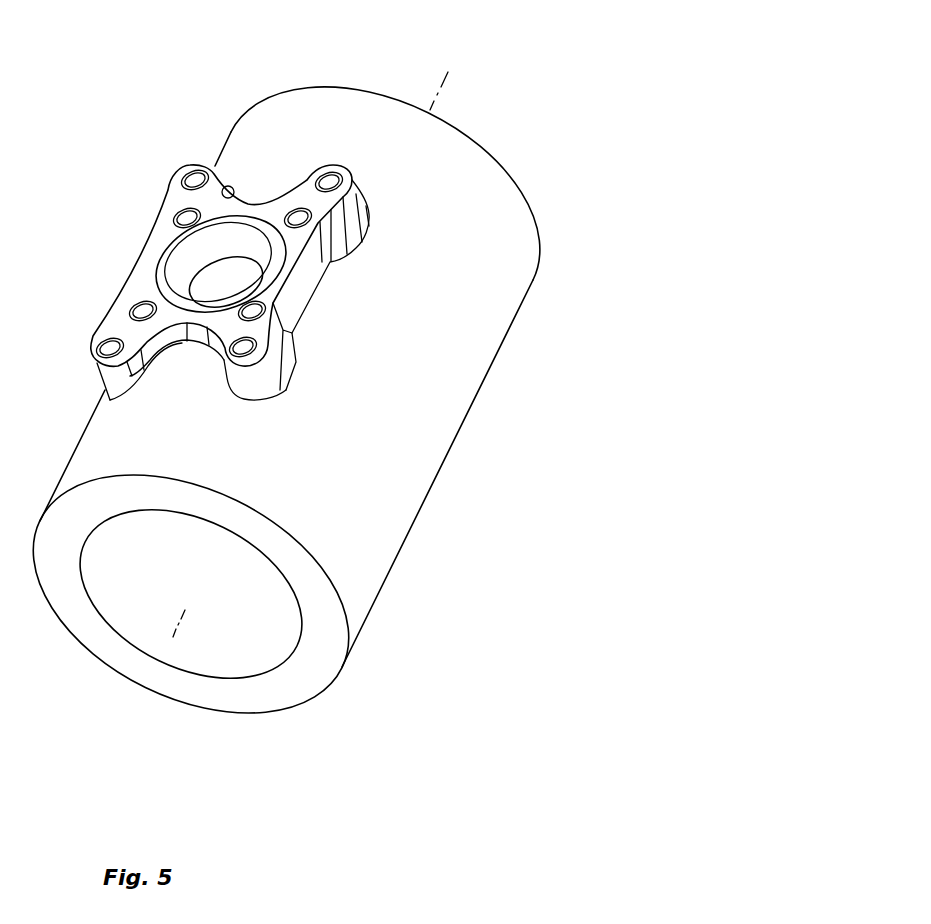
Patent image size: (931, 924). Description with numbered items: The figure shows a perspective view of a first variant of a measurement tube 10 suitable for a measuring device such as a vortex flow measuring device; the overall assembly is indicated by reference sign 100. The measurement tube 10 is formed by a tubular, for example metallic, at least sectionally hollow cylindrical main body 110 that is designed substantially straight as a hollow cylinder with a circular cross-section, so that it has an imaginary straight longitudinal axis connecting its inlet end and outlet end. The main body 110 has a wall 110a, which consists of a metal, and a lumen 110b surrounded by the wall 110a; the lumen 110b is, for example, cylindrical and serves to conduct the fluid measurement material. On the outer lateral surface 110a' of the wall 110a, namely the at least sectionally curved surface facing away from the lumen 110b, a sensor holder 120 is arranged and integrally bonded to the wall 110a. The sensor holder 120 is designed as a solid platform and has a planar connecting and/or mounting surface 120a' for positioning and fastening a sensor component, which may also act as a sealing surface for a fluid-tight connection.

The measurement tube 10 is at (196, 120).
The housing assembly 100 is at (429, 170).
The main body 110 is at (387, 488).
The wall 110a is at (194, 594).
The outer lateral surface 110a' is at (446, 183).
The lumen 110b is at (251, 642).
The sensor holder 120 is at (288, 292).
The connecting surface and/or mounting surface 120a' is at (123, 199).